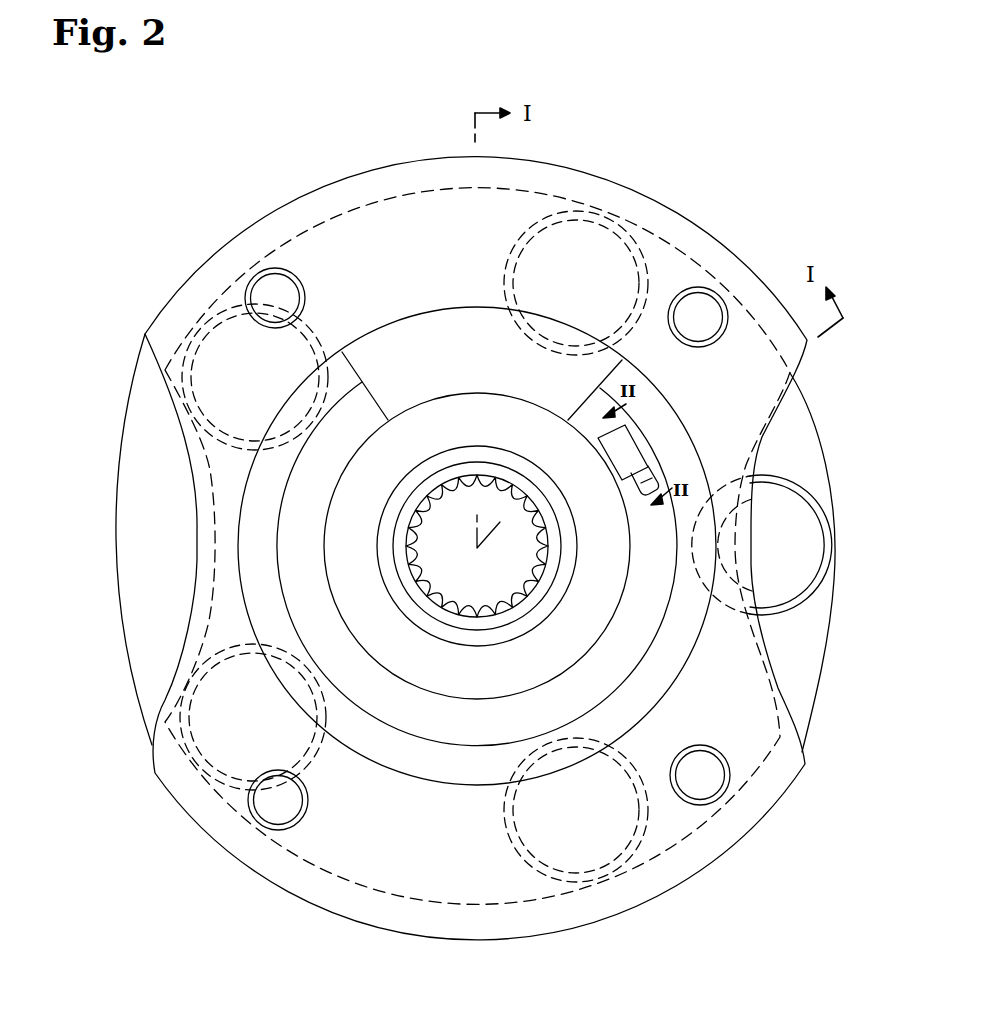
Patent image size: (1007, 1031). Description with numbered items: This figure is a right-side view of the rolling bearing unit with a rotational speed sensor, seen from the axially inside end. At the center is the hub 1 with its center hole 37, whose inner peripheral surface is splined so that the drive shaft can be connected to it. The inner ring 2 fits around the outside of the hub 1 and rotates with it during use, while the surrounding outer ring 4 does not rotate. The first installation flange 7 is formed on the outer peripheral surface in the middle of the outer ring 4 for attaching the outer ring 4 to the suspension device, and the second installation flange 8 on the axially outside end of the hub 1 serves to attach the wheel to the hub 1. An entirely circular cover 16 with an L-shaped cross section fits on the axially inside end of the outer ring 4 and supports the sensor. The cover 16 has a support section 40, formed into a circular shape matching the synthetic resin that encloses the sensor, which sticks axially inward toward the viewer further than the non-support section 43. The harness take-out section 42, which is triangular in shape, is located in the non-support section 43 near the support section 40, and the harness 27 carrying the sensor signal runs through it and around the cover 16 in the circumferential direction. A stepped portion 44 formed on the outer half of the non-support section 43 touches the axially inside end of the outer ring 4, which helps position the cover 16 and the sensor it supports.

The hub 1 is at (150, 656).
The inner ring 2 is at (414, 445).
The outer ring 4 is at (197, 527).
The first installation flange 7 is at (570, 178).
The second installation flange 8 is at (807, 647).
The cover 16 is at (440, 783).
The harness 27 is at (648, 492).
The center hole 37 is at (490, 618).
The support section 40 is at (443, 347).
The harness take-out section 42 is at (622, 445).
The non-support section 43 is at (643, 633).
The stepped portion 44 is at (660, 683).